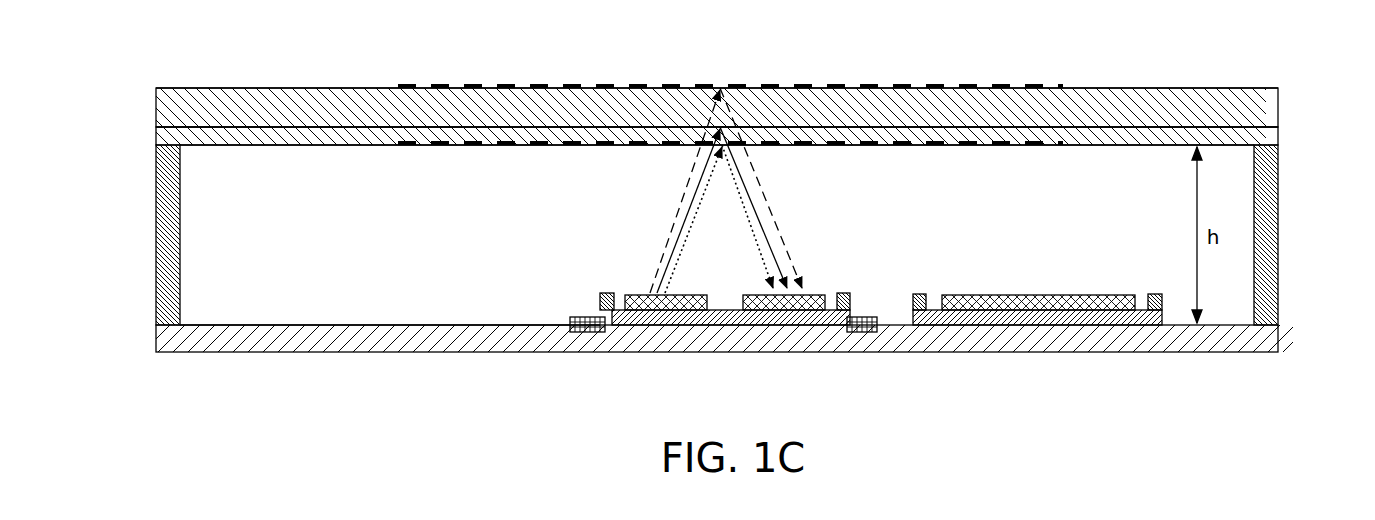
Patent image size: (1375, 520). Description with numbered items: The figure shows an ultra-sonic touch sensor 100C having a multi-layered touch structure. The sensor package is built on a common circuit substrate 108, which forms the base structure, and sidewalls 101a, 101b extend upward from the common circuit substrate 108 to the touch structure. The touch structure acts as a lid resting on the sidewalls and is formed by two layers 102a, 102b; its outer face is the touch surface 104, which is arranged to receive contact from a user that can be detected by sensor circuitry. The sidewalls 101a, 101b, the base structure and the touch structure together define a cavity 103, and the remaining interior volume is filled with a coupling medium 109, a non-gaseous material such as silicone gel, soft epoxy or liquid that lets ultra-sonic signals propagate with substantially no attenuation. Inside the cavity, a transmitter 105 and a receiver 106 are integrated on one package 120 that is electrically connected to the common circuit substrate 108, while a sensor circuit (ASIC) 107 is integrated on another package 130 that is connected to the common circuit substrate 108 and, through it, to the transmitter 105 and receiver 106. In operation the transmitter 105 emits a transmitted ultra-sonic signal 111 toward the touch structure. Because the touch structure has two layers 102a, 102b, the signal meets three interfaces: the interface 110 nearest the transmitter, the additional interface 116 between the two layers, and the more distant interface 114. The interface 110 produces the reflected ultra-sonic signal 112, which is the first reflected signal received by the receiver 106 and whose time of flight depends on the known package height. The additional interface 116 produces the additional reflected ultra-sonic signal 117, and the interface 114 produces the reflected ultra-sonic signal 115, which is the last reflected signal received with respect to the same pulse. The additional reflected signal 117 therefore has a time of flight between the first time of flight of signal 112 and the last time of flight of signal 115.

The ultra-sonic touch sensor 100C is at (134, 44).
The touch structure layer 102a is at (156, 103).
The touch structure layer 102b is at (156, 139).
The touch surface 104 is at (1186, 88).
The interface 114 is at (268, 98).
The additional interface 116 is at (380, 132).
The interface 110 is at (258, 151).
The sidewall 101a is at (156, 248).
The sidewall 101b is at (1266, 232).
The cavity 103 is at (344, 241).
The common circuit substrate 108 is at (367, 335).
The coupling medium 109 is at (228, 302).
The package 120 is at (618, 325).
The transmitter 105 is at (682, 310).
The receiver 106 is at (785, 310).
The package 130 is at (962, 322).
The sensor circuit (ASIC) 107 is at (1038, 305).
The transmitted ultra-sonic signal 111 is at (681, 190).
The reflected ultra-sonic signal 115 is at (747, 152).
The additional reflected ultra-sonic signal 117 is at (748, 185).
The reflected ultra-sonic signal 112 is at (752, 220).